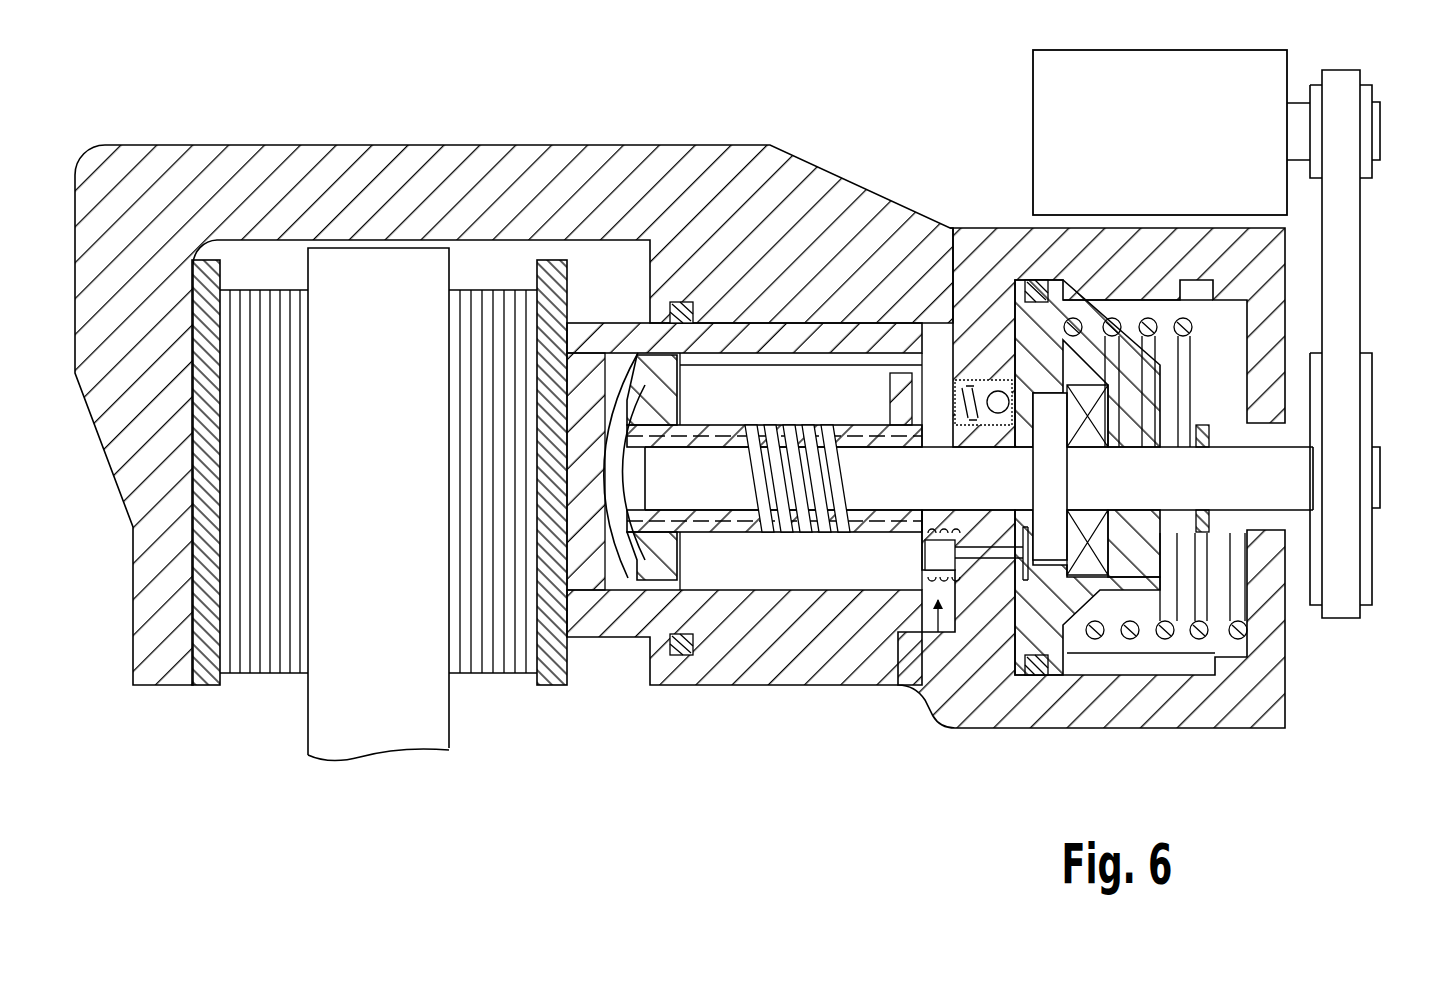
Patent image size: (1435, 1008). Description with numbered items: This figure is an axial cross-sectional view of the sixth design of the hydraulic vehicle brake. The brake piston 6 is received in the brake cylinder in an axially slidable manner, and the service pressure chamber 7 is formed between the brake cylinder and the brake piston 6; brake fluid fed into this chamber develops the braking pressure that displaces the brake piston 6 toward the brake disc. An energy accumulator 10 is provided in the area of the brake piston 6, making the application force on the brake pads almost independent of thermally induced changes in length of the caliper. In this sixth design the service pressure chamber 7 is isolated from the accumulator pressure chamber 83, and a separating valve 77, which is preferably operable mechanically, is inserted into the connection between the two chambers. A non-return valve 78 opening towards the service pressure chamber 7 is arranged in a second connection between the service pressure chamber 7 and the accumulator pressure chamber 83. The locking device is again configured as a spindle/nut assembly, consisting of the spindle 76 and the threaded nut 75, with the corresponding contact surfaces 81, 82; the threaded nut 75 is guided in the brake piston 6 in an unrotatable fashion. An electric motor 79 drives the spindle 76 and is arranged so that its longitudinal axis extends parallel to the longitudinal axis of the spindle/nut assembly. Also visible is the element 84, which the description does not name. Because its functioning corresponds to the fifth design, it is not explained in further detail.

The brake piston 6 is at (634, 610).
The service pressure chamber 7 is at (800, 567).
The energy accumulator 10 is at (1205, 367).
The threaded nut 75 is at (878, 520).
The spindle 76 is at (731, 500).
The separating valve 77 is at (945, 640).
The non-return valve 78 is at (981, 366).
The electric motor 79 is at (1055, 95).
The contact surface 81 is at (612, 573).
The contact surface 82 is at (622, 403).
The accumulator pressure chamber 83 is at (1022, 597).
The seal 84 is at (1057, 632).